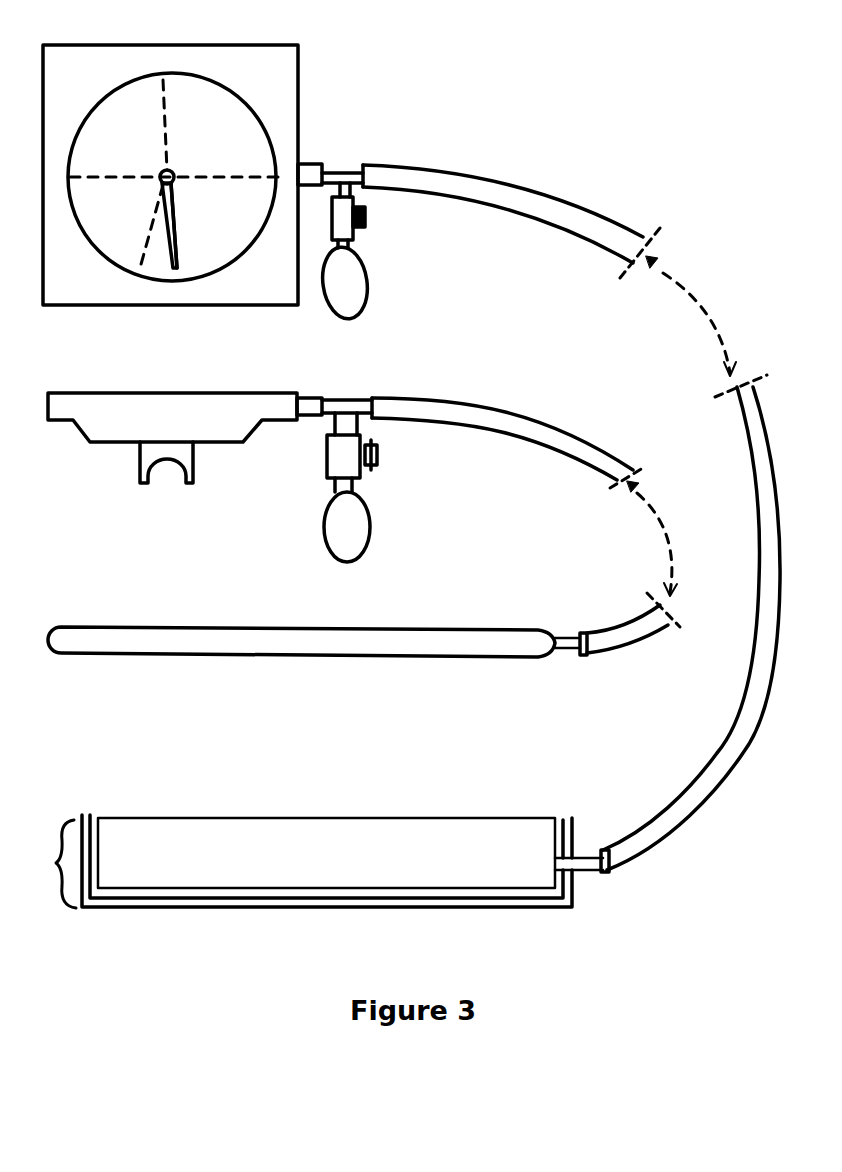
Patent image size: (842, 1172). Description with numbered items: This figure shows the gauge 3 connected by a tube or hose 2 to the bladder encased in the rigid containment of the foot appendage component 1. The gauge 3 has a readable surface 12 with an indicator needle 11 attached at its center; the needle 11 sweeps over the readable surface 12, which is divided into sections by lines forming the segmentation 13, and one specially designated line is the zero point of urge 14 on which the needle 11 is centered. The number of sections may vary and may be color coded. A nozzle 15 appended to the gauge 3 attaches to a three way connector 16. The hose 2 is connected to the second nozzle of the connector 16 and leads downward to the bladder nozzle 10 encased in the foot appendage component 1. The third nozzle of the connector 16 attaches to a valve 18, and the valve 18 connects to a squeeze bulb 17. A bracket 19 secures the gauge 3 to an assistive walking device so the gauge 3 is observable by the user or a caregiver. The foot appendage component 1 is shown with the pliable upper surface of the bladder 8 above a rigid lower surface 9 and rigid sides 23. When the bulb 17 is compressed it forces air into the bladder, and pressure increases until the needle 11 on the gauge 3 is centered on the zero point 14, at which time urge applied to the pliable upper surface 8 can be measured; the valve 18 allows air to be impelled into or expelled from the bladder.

The foot appendage component containing bladder 1 is at (57, 864).
The tube or hose 2 is at (515, 175).
The gauge 3 is at (310, 112).
The pliable upper surface of bladder 8 is at (116, 620).
The rigid lower surface of foot appendage component 9 is at (116, 658).
The bladder nozzle encased in foot appendage component 10 is at (565, 660).
The indicator needle 11 is at (150, 202).
The readable surface of gauge 12 is at (173, 177).
The segmentation of gauge 13 is at (135, 250).
The needle/line for zero point of urge 14 is at (182, 248).
The nozzle 15 is at (328, 162).
The three way connector 16 is at (350, 190).
The squeeze bulb 17 is at (368, 277).
The valve 18 is at (370, 227).
The bracket 19 is at (193, 493).
The rigid sides of foot appendage component 23 is at (578, 883).